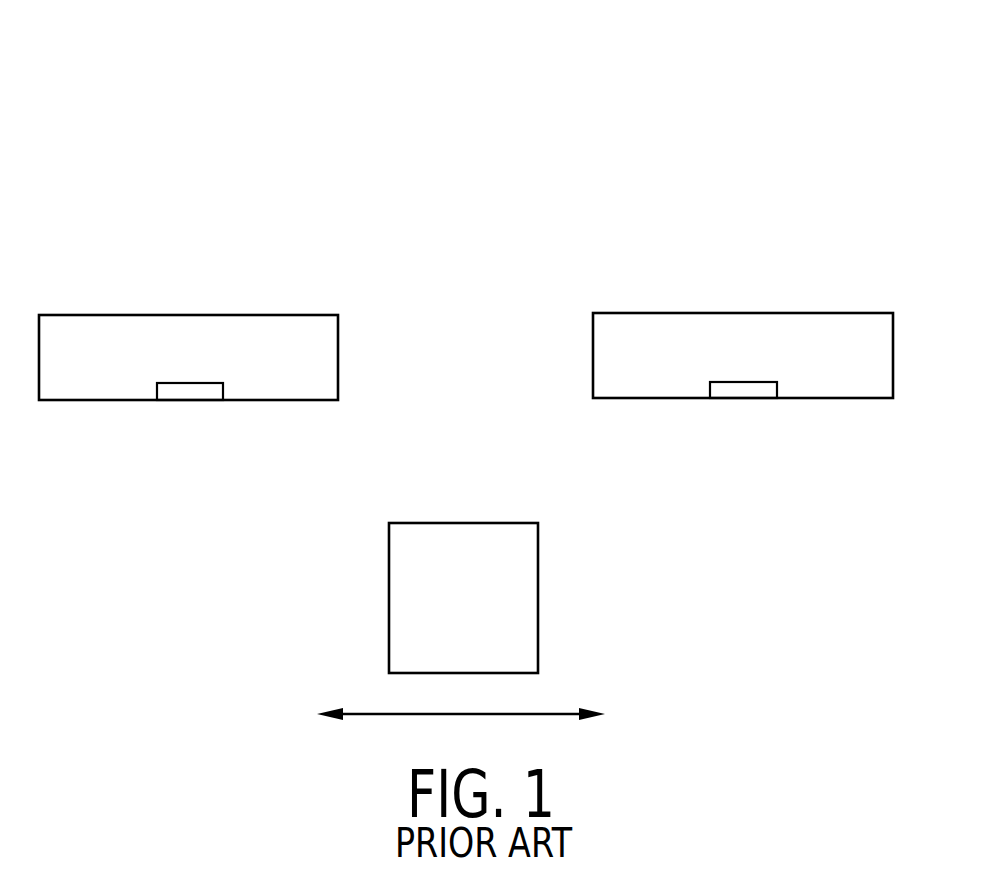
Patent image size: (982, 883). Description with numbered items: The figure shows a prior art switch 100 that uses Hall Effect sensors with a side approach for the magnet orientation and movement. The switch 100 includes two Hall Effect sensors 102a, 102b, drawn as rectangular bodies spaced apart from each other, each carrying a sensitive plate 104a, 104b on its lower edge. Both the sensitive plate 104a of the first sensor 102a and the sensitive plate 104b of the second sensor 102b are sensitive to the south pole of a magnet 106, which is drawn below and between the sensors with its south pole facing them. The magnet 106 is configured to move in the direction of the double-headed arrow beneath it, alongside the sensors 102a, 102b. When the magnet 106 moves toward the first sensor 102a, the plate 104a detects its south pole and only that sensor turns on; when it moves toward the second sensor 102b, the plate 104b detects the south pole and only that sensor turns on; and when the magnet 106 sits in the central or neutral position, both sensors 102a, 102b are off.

The switch 100 is at (190, 118).
The Hall Effect sensor 102a is at (98, 327).
The Hall Effect sensor 102b is at (652, 326).
The sensitive plate 104a is at (190, 392).
The sensitive plate 104b is at (743, 390).
The magnet 106 is at (463, 522).